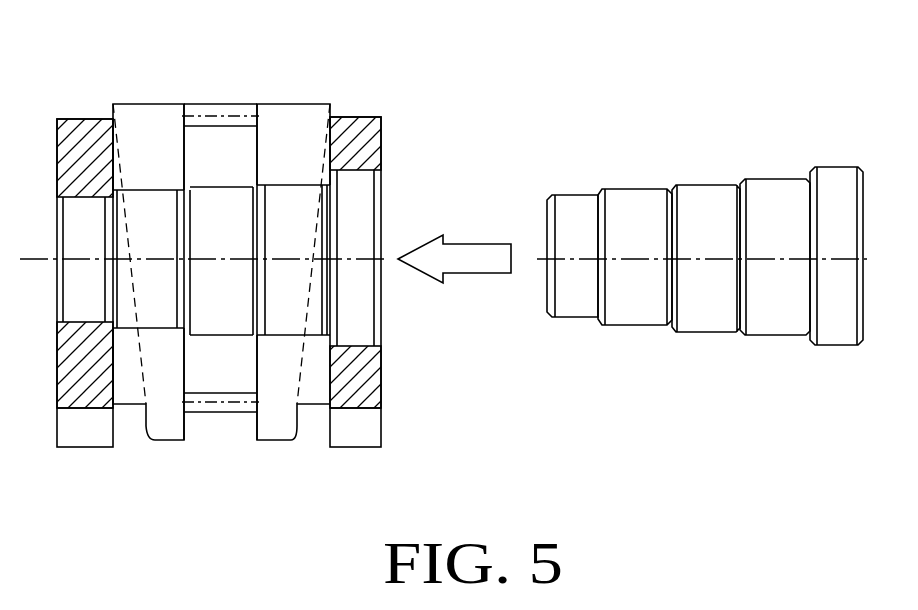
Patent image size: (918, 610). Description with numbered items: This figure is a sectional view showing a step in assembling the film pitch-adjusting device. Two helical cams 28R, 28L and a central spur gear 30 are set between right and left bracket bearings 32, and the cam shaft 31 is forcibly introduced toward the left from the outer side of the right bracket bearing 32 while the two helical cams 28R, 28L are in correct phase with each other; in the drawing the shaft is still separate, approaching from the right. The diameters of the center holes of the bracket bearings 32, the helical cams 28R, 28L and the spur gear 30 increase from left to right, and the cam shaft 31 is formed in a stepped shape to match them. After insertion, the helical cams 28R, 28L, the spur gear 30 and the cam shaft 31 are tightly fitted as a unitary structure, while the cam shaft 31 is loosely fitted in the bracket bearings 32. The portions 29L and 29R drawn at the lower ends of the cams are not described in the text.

The bracket bearing 32 is at (78, 118).
The left helical cam 28L is at (148, 103).
The right helical cam 28R is at (293, 103).
The left claw 29L is at (146, 430).
The right claw 29R is at (299, 430).
The spur gear 30 is at (222, 104).
The cam shaft 31 is at (706, 186).